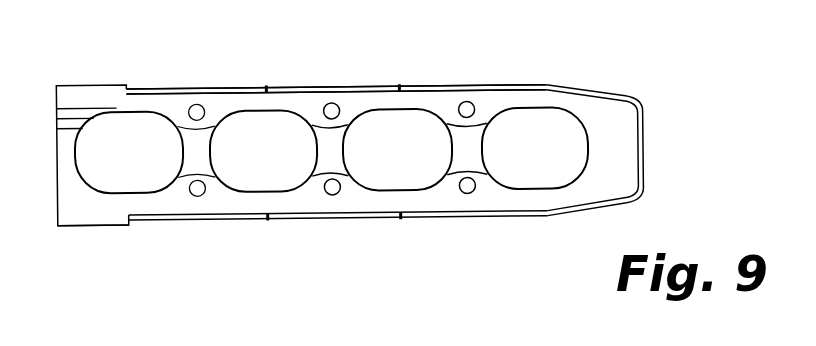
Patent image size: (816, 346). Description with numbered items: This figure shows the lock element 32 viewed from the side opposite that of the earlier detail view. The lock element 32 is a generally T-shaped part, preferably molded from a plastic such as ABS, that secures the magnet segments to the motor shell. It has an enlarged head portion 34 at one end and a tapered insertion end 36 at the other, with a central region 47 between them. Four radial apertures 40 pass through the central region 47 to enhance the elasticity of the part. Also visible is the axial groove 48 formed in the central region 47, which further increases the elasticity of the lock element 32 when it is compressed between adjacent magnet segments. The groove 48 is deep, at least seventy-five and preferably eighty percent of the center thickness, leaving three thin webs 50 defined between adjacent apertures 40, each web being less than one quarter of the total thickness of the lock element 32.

The lock element 32 is at (87, 85).
The head portion 34 is at (88, 226).
The tapered insertion end 36 is at (610, 93).
The radial aperture 40 is at (287, 128).
The central region 47 is at (436, 80).
The axial groove 48 is at (197, 165).
The web 50 is at (204, 137).